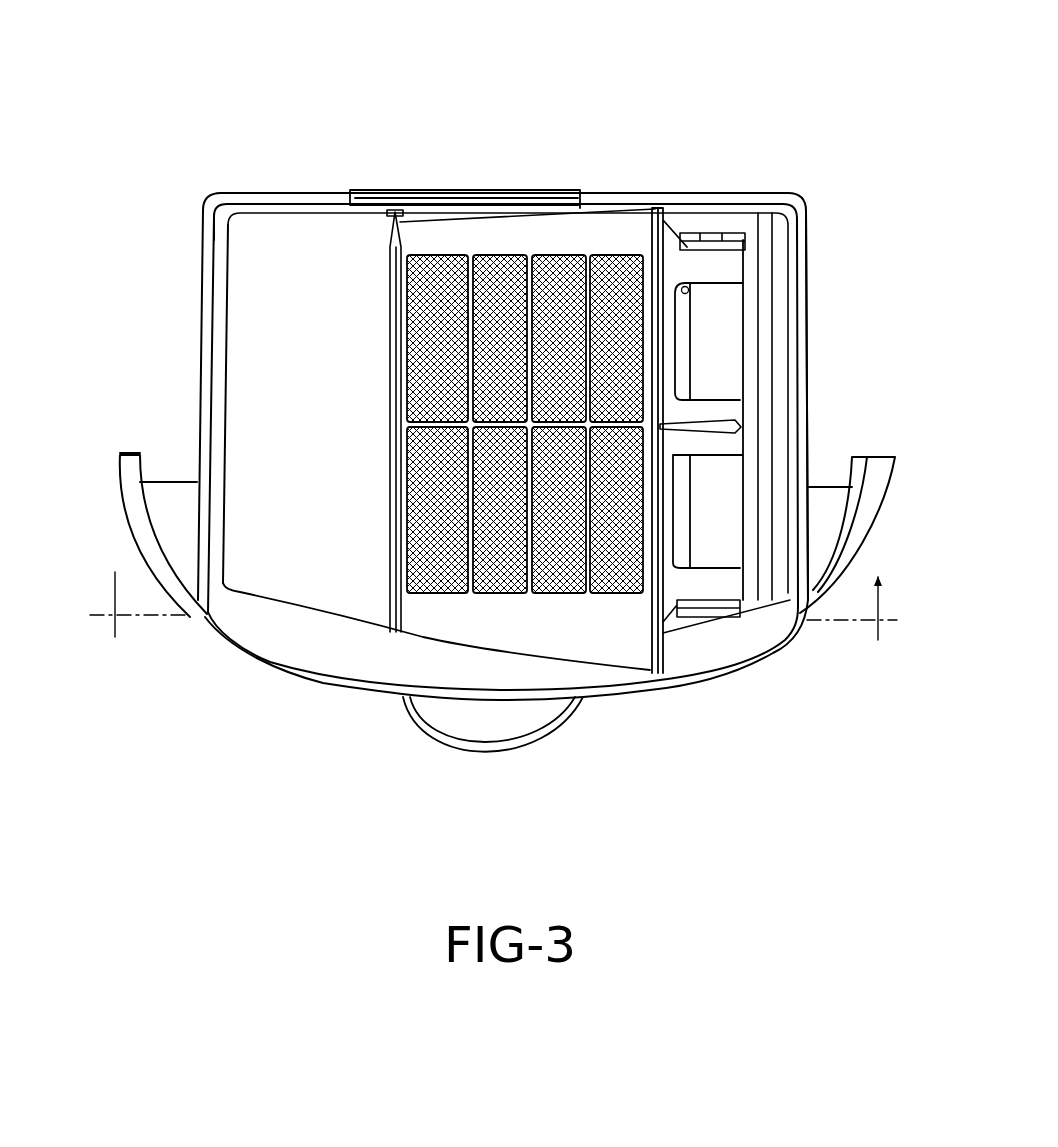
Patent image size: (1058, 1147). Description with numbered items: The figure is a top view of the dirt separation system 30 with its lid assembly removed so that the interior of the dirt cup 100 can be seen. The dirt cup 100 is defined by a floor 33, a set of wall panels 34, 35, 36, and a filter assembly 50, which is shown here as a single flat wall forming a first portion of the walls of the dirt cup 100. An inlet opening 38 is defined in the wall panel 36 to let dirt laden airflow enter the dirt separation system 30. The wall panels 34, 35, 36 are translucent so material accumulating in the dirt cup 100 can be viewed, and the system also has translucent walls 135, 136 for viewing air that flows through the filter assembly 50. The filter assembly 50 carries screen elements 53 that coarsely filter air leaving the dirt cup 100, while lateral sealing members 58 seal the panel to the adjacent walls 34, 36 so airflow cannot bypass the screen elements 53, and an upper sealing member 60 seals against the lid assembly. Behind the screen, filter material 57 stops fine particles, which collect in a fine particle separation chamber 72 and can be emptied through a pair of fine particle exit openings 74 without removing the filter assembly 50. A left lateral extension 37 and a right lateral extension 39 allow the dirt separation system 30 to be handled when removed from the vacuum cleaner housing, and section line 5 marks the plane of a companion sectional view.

The dirt separation system 30 is at (817, 162).
The floor 33 is at (286, 443).
The wall panel 34 is at (338, 678).
The wall panel 35 is at (203, 280).
The wall panel 36 is at (218, 192).
The left lateral extension 37 is at (130, 512).
The inlet opening 38 is at (360, 188).
The right lateral extension 39 is at (873, 493).
The filter assembly 50 is at (525, 237).
The screen elements 53 is at (493, 312).
The filter material 57 is at (704, 361).
The lateral sealing members 58 is at (435, 237).
The upper sealing member 60 is at (658, 665).
The fine particle separation chamber 72 is at (683, 363).
The fine particle exit openings 74 is at (685, 290).
The dirt cup 100 is at (255, 360).
The translucent wall 135 is at (805, 345).
The translucent wall 136 is at (757, 197).
The section line 5- 5 is at (495, 617).